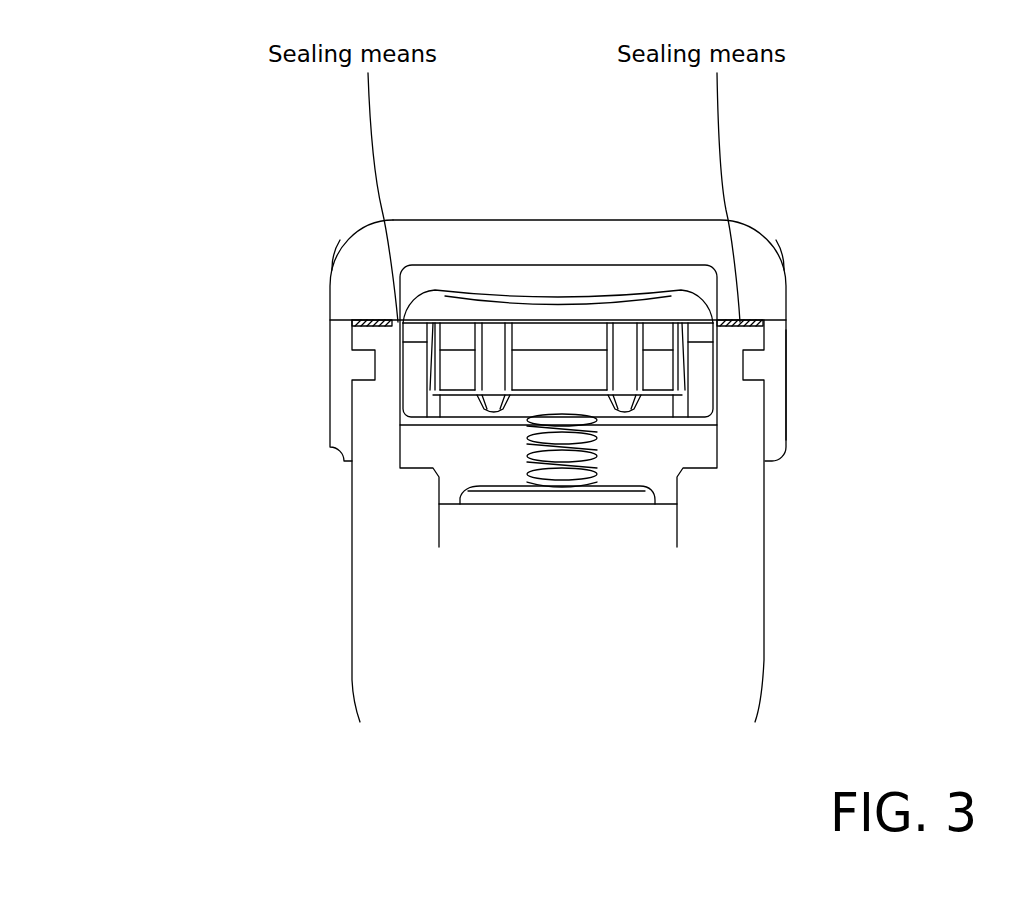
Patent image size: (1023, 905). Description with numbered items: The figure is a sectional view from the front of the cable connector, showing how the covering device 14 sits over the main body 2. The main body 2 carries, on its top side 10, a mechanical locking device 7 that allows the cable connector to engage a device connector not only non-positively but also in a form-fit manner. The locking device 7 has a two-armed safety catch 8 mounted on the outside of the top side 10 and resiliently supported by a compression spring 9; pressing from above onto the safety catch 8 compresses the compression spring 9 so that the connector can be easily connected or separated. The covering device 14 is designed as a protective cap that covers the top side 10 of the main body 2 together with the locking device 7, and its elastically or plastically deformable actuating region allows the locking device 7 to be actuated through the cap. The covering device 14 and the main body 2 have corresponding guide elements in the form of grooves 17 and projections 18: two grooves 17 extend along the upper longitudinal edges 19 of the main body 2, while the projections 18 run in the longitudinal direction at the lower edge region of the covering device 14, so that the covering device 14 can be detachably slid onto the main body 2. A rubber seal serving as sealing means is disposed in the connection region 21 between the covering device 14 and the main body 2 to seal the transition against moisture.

The main body 2 is at (398, 587).
The mechanical locking device 7 is at (491, 276).
The two-armed safety catch 8 is at (455, 297).
The compression spring 9 is at (553, 413).
The top side 10 is at (503, 182).
The covering device 14 is at (553, 214).
The grooves 17 is at (748, 320).
The projections 18 is at (353, 318).
The upper longitudinal edges 19 is at (319, 248).
The connection region 21 is at (805, 376).